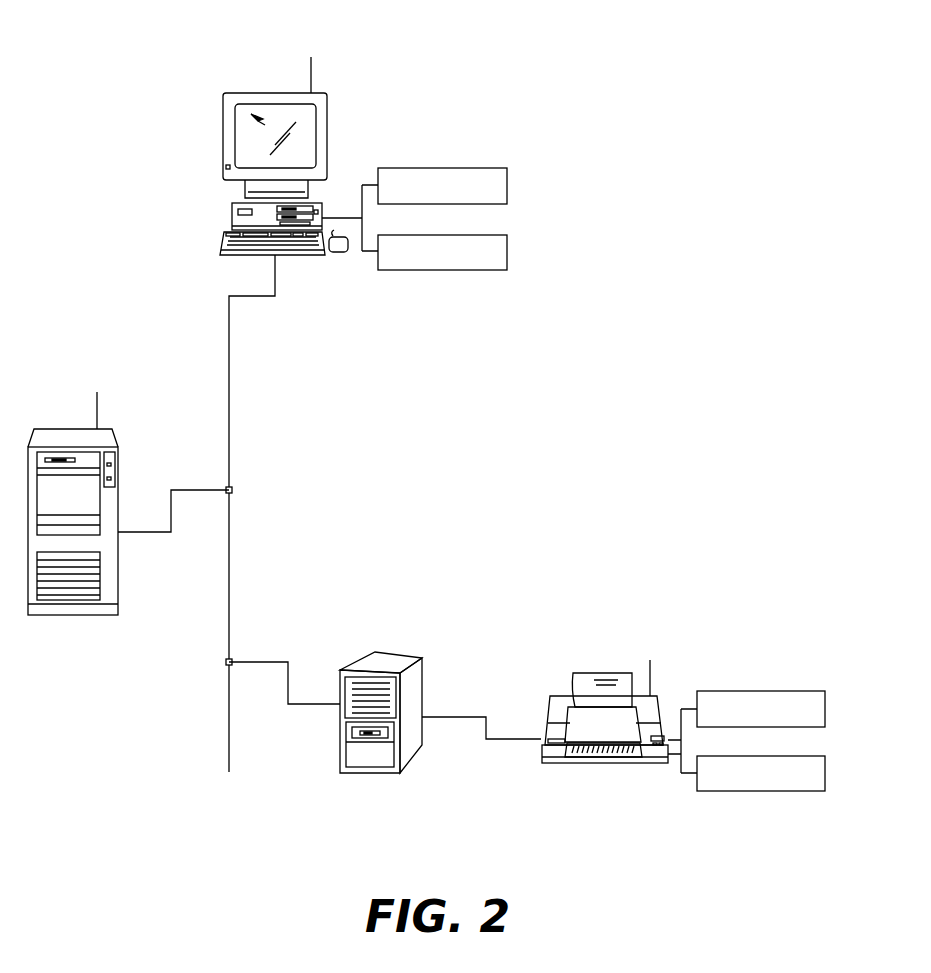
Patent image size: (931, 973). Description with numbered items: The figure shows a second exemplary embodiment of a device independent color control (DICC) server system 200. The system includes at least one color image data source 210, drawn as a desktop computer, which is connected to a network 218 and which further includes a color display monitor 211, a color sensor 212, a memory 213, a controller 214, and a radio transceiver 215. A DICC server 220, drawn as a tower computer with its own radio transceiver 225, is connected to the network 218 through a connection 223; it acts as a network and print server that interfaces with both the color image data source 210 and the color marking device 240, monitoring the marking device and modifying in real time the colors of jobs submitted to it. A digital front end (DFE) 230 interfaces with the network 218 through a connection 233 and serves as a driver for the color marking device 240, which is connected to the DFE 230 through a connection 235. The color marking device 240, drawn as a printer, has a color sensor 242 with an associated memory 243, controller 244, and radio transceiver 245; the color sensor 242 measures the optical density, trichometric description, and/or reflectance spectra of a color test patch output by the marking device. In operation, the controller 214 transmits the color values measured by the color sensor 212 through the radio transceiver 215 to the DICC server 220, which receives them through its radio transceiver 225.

The device independent color control server system 200 is at (556, 36).
The color image data source 210 is at (267, 174).
The color display monitor 211 is at (254, 118).
The color sensor 212 is at (234, 153).
The memory 213 is at (440, 270).
The controller 214 is at (440, 168).
The radio transceiver 215 is at (312, 80).
The network 218 is at (229, 385).
The device independent color control server 220 is at (77, 611).
The connection 223 is at (190, 487).
The radio transceiver 225 is at (100, 414).
The digital front end 230 is at (387, 660).
The connection 233 is at (269, 660).
The connection 235 is at (513, 744).
The color marking device 240 is at (586, 728).
The color sensor 242 is at (596, 748).
The memory 243 is at (760, 791).
The controller 244 is at (760, 691).
The radio transceiver 245 is at (652, 680).